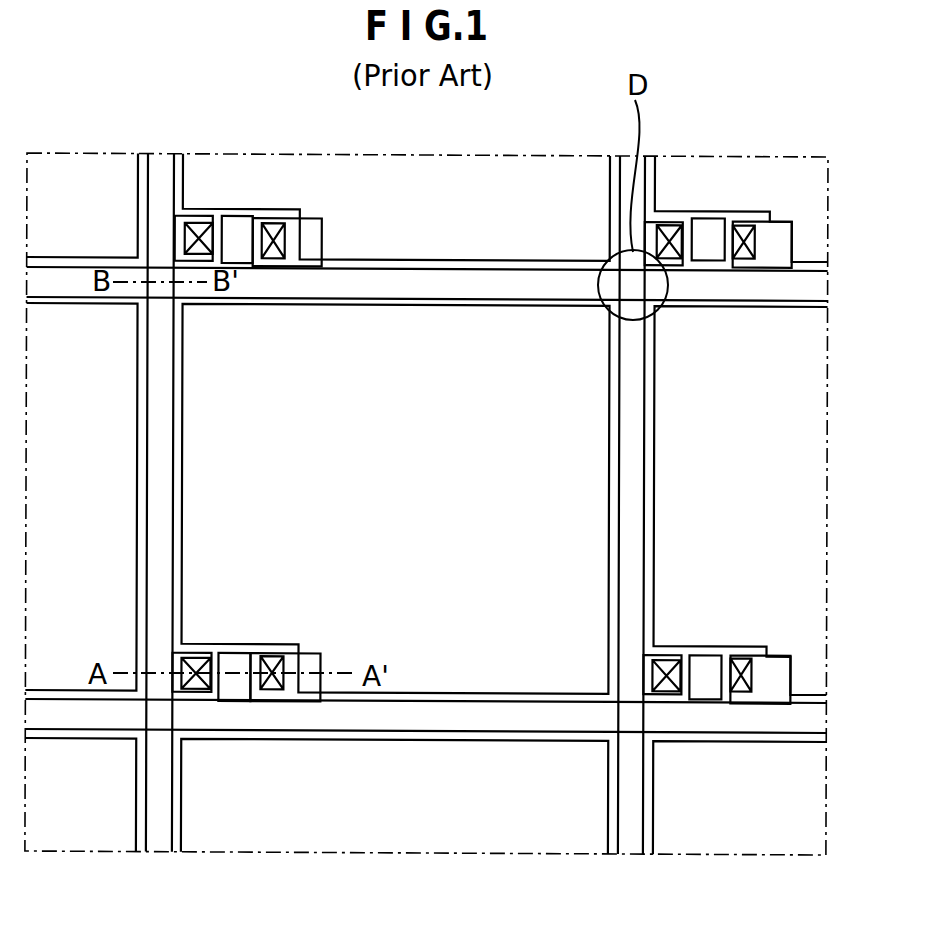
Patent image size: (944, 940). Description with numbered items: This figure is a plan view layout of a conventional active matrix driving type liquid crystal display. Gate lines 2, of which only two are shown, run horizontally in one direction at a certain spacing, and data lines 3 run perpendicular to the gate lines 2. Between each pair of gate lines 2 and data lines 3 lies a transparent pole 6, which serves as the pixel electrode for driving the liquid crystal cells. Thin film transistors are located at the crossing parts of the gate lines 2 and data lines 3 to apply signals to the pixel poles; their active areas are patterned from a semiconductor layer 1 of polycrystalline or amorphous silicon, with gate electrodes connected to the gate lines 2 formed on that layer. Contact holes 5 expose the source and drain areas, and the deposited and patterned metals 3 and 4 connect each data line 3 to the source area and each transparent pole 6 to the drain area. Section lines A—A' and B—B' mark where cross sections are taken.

The semiconductor layer 1 is at (712, 652).
The gate lines 2 is at (803, 720).
The data lines 3 is at (632, 835).
The metal 4 is at (787, 218).
The contact holes 5 is at (273, 655).
The transparent poles 6 is at (585, 468).